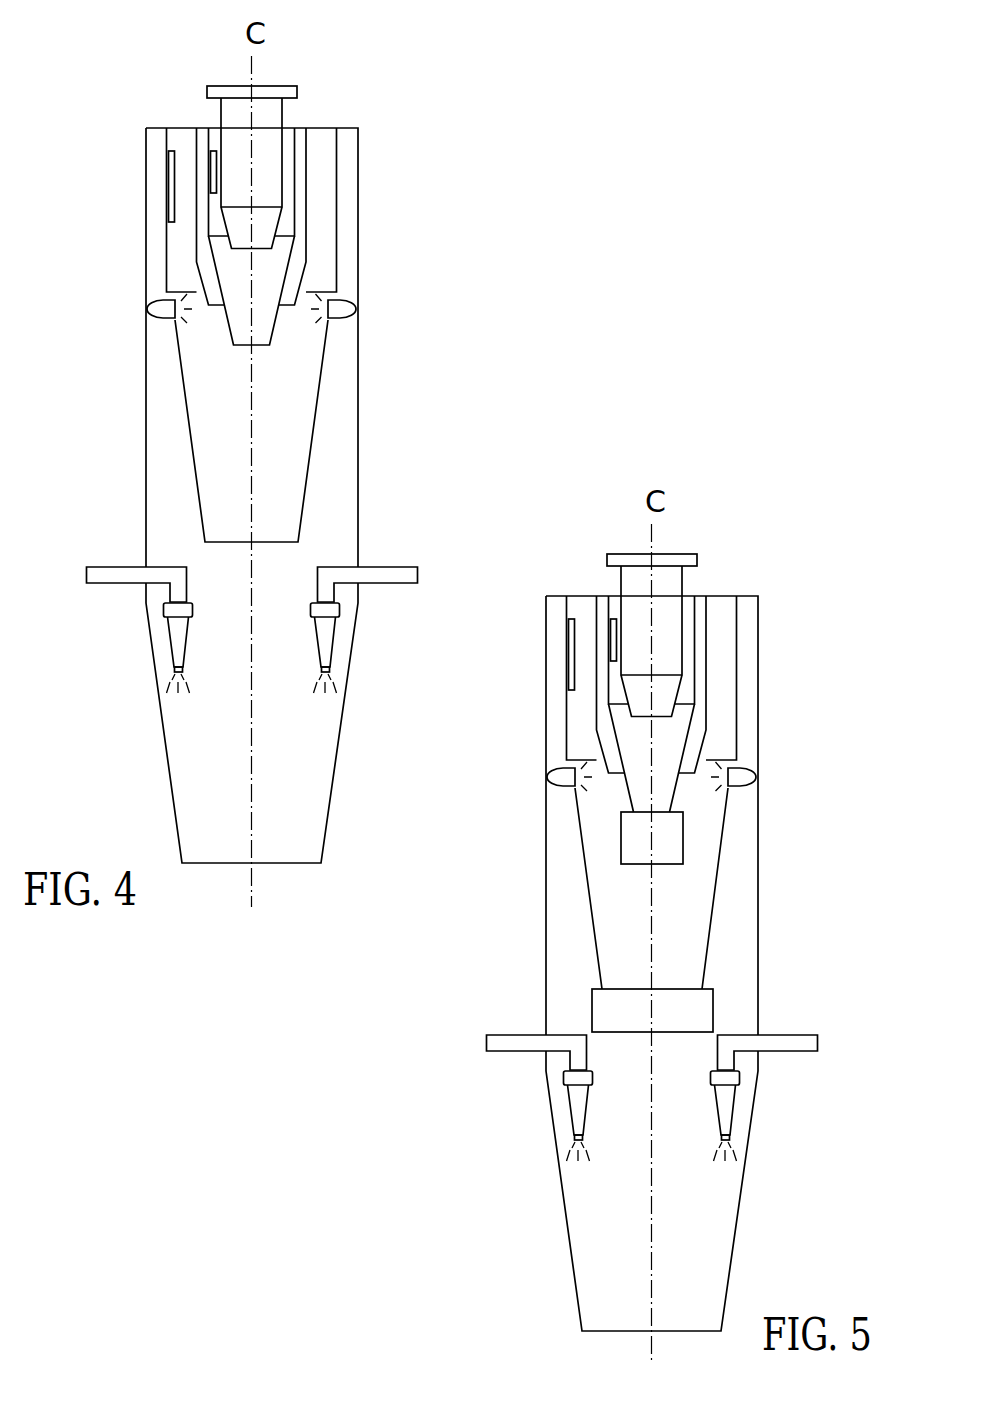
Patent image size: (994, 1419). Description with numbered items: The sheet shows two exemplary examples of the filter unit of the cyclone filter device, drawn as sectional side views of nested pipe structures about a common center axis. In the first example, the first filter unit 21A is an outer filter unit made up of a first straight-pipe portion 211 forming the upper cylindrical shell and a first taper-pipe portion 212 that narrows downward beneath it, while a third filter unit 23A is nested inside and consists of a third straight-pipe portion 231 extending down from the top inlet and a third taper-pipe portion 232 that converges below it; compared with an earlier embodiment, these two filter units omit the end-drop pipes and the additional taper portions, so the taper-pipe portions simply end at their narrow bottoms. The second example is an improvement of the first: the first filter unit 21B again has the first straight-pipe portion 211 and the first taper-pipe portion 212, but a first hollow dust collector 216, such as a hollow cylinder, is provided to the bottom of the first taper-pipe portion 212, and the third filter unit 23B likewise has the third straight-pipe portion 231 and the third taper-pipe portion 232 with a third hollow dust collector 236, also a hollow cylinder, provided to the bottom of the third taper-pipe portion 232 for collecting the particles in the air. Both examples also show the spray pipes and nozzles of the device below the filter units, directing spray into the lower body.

In FIG. 4, the first filter unit 21A is at (80, 232).
In FIG. 5, the first filter unit 21B is at (472, 710).
In FIG. 4, the first straight-pipe portion 211 is at (175, 249).
In FIG. 5, the first straight-pipe portion 211 is at (576, 726).
In FIG. 4, the first taper-pipe portion 212 is at (186, 393).
In FIG. 5, the first taper-pipe portion 212 is at (592, 887).
In FIG. 5, the first hollow dust collector 216 is at (593, 1011).
In FIG. 4, the third filter unit 23A is at (433, 162).
In FIG. 5, the third filter unit 23B is at (825, 857).
In FIG. 4, the third straight-pipe portion 231 is at (295, 196).
In FIG. 5, the third straight-pipe portion 231 is at (694, 648).
In FIG. 4, the third taper-pipe portion 232 is at (286, 257).
In FIG. 5, the third taper-pipe portion 232 is at (684, 725).
In FIG. 5, the third hollow dust collector 236 is at (683, 838).